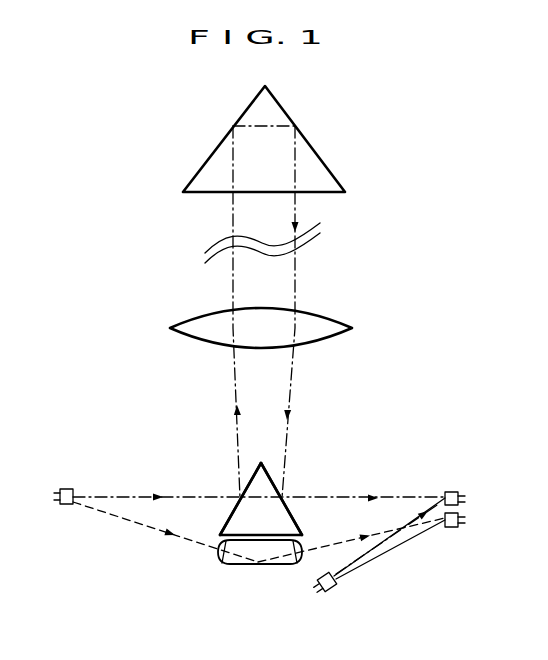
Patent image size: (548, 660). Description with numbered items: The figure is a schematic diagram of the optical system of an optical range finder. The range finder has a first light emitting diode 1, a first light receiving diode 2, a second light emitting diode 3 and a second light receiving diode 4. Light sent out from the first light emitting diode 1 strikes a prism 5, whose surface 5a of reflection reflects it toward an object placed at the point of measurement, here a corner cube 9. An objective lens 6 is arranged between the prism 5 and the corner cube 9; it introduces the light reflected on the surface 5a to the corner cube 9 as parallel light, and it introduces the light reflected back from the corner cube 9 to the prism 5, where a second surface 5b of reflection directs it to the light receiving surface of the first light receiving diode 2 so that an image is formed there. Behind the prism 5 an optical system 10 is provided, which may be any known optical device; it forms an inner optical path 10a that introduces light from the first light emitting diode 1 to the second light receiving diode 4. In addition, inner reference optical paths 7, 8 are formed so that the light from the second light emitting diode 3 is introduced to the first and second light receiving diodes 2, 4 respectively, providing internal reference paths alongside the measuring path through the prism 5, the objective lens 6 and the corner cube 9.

The first light emitting diode 1 is at (68, 487).
The first light receiving diode 2 is at (452, 490).
The second light emitting diode 3 is at (330, 593).
The second light receiving diode 4 is at (452, 528).
The prism 5 is at (262, 485).
The surface of reflection 5a is at (229, 513).
The surface of reflection 5b is at (300, 517).
The objective lens 6 is at (332, 327).
The inner reference optical path 7 is at (381, 548).
The inner reference optical path 8 is at (407, 543).
The corner cube 9 is at (308, 158).
The optical system 10 is at (236, 567).
The inner optical path 10a is at (130, 522).